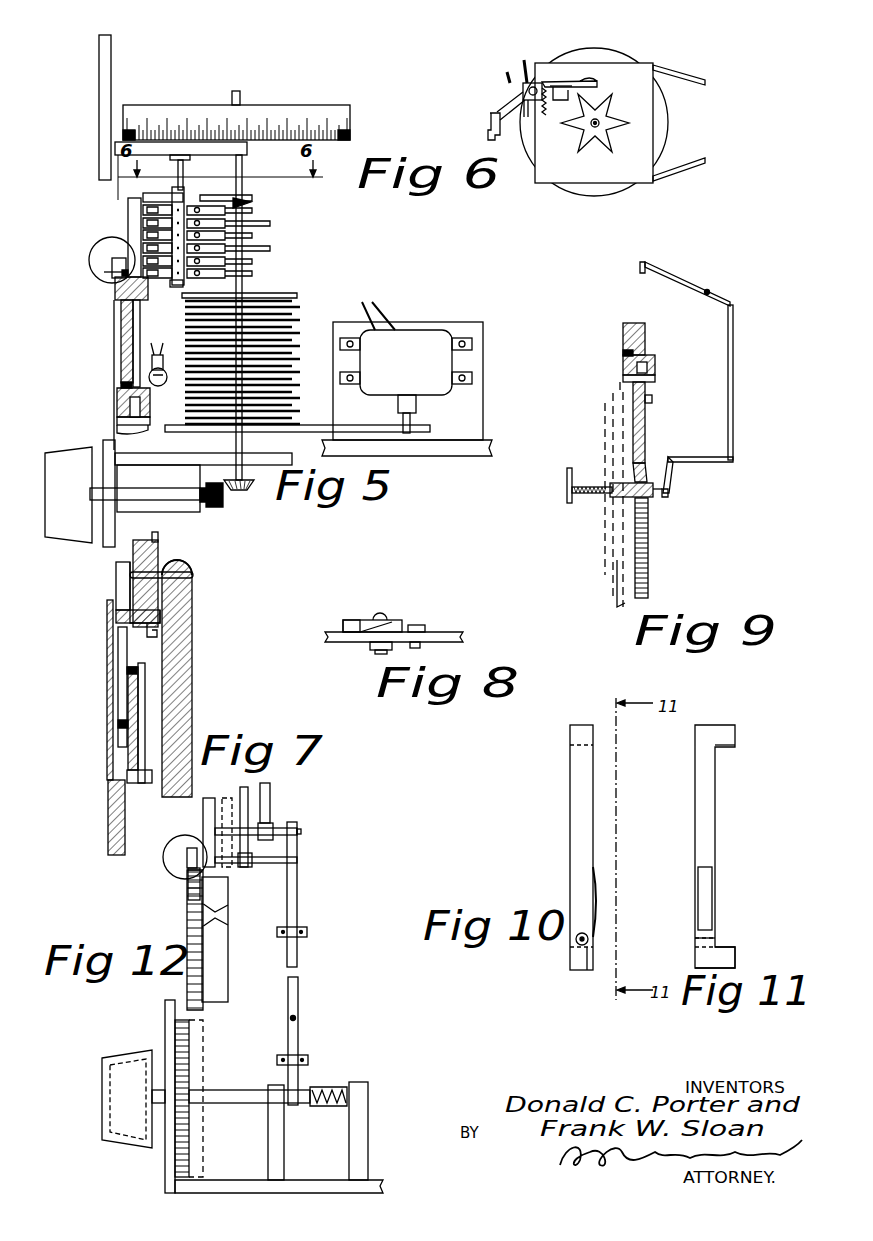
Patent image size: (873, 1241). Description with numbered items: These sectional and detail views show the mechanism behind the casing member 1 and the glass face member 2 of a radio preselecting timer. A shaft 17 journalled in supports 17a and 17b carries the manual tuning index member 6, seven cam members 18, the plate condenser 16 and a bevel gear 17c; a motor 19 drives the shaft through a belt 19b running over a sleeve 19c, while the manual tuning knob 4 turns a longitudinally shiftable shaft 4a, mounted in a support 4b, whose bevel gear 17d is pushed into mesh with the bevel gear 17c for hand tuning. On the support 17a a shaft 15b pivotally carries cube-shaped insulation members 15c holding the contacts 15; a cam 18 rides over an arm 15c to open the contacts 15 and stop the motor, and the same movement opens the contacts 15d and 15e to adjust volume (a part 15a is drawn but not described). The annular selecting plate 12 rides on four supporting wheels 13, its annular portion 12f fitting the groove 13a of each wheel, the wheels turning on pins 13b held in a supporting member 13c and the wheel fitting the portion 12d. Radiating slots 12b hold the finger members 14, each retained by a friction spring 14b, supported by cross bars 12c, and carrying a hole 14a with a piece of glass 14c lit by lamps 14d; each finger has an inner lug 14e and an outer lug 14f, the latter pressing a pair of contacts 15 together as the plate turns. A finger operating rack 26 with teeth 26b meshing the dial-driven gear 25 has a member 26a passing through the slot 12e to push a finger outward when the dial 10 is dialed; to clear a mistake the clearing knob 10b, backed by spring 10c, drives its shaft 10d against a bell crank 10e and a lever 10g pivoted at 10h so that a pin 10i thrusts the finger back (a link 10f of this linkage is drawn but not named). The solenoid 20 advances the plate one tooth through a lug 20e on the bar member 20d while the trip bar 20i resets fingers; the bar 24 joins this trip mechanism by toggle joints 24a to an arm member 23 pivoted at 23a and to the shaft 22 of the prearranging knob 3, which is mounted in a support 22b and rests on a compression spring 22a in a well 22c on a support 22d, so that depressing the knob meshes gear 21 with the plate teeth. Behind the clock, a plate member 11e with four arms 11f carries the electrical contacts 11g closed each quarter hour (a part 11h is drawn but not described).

In FIG. 5, the casing member 1 is at (103, 132).
In FIG. 7, the casing member 1 is at (108, 804).
In FIG. 12, the casing member 1 is at (168, 1164).
In FIG. 9, the face member 2 is at (620, 588).
In FIG. 7, the face member 2 is at (110, 694).
In FIG. 12, the prearranging knob 3 is at (107, 1122).
In FIG. 5, the manual tuning knob 4 is at (50, 520).
In FIG. 5, the longitudinally shiftable shaft 4a is at (174, 503).
In FIG. 5, the support 4b is at (134, 512).
In FIG. 5, the manual tuning index member 6 is at (338, 110).
In FIG. 9, the dial 10 is at (607, 523).
In FIG. 9, the clearing knob member 10b is at (566, 493).
In FIG. 9, the spring 10c is at (588, 494).
In FIG. 9, the shaft 10d is at (670, 486).
In FIG. 9, the bell crank member 10e is at (670, 460).
In FIG. 9, the link arm 10f is at (733, 392).
In FIG. 9, the lever 10g is at (687, 281).
In FIG. 9, the pivot 10h is at (708, 296).
In FIG. 9, the pin member 10i is at (640, 265).
In FIG. 8, the plate member 11e is at (363, 640).
In FIG. 8, the extended arms 11f is at (390, 623).
In FIG. 8, the electrical contacts 11g is at (418, 625).
In FIG. 8, the pin 11h is at (377, 617).
In FIG. 5, the selecting plate 12 is at (117, 408).
In FIG. 12, the selecting plate 12 is at (197, 957).
In FIG. 7, the radiating slots 12b is at (123, 729).
In FIG. 7, the cross bars 12c is at (140, 720).
In FIG. 7, the portion 12d is at (157, 628).
In FIG. 5, the slots 12e is at (133, 422).
In FIG. 9, the slots 12e is at (645, 368).
In FIG. 7, the slots 12e is at (123, 610).
In FIG. 7, the annular portion 12f is at (158, 630).
In FIG. 7, the selecting plate supporting wheels 13 is at (150, 560).
In FIG. 7, the groove 13a is at (194, 575).
In FIG. 7, the pin 13b is at (190, 568).
In FIG. 7, the supporting member 13c is at (183, 657).
In FIG. 5, the finger member 14 is at (123, 337).
In FIG. 9, the finger member 14 is at (647, 331).
In FIG. 7, the finger member 14 is at (140, 750).
In FIG. 10, the finger member 14 is at (707, 783).
In FIG. 11, the finger member 14 is at (715, 846).
In FIG. 10, the hole 14a is at (577, 942).
In FIG. 10, the friction spring 14b is at (592, 887).
In FIG. 11, the friction spring 14b is at (705, 898).
In FIG. 5, the piece of glass 14c is at (121, 386).
In FIG. 9, the piece of glass 14c is at (630, 349).
In FIG. 7, the piece of glass 14c is at (128, 673).
In FIG. 10, the piece of glass 14c is at (587, 948).
In FIG. 11, the piece of glass 14c is at (697, 940).
In FIG. 5, the lamps 14d is at (150, 377).
In FIG. 9, the lug portion 14e is at (648, 355).
In FIG. 11, the lug portion 14e is at (727, 953).
In FIG. 11, the lug 14f is at (732, 740).
In FIG. 5, the contacts 15 is at (143, 210).
In FIG. 6, the contacts 15 is at (492, 122).
In FIG. 5, the pawl spring 15a is at (160, 196).
In FIG. 6, the pawl spring 15a is at (520, 135).
In FIG. 5, the shaft 15b is at (183, 172).
In FIG. 5, the insulation members 15c is at (167, 290).
In FIG. 6, the insulation members 15c is at (540, 80).
In FIG. 6, the contacts 15d is at (560, 85).
In FIG. 6, the contacts 15e is at (572, 84).
In FIG. 5, the plate condenser 16 is at (268, 328).
In FIG. 6, the plate condenser 16 is at (655, 142).
In FIG. 5, the shaft 17 is at (242, 164).
In FIG. 6, the shaft 17 is at (600, 122).
In FIG. 5, the support 17a is at (217, 147).
In FIG. 5, the support 17b is at (258, 465).
In FIG. 5, the bevel gear 17c is at (236, 496).
In FIG. 5, the bevel gear 17d is at (205, 484).
In FIG. 5, the cam members 18 is at (250, 204).
In FIG. 6, the cam members 18 is at (572, 125).
In FIG. 5, the motor 19 is at (428, 340).
In FIG. 5, the belt 19b is at (390, 428).
In FIG. 6, the sleeve 19c is at (595, 190).
In FIG. 5, the solenoid 20 is at (100, 280).
In FIG. 12, the solenoid 20 is at (173, 858).
In FIG. 12, the bar member 20d is at (192, 872).
In FIG. 5, the lug 20e is at (110, 262).
In FIG. 5, the trip bar 20i is at (132, 218).
In FIG. 12, the gear member 21 is at (189, 1043).
In FIG. 12, the shaft 22 is at (213, 1095).
In FIG. 12, the compression spring 22a is at (326, 1108).
In FIG. 12, the support 22b is at (275, 1126).
In FIG. 12, the well 22c is at (338, 1084).
In FIG. 12, the support 22d is at (368, 1136).
In FIG. 12, the arm member 23 is at (298, 1042).
In FIG. 12, the pivot point 23a is at (309, 1060).
In FIG. 12, the bar 24 is at (294, 922).
In FIG. 12, the toggle joints 24a is at (296, 1018).
In FIG. 9, the gear 25 is at (653, 500).
In FIG. 9, the finger operating rack 26 is at (648, 576).
In FIG. 9, the member 26a is at (642, 424).
In FIG. 9, the teeth 26b is at (648, 552).